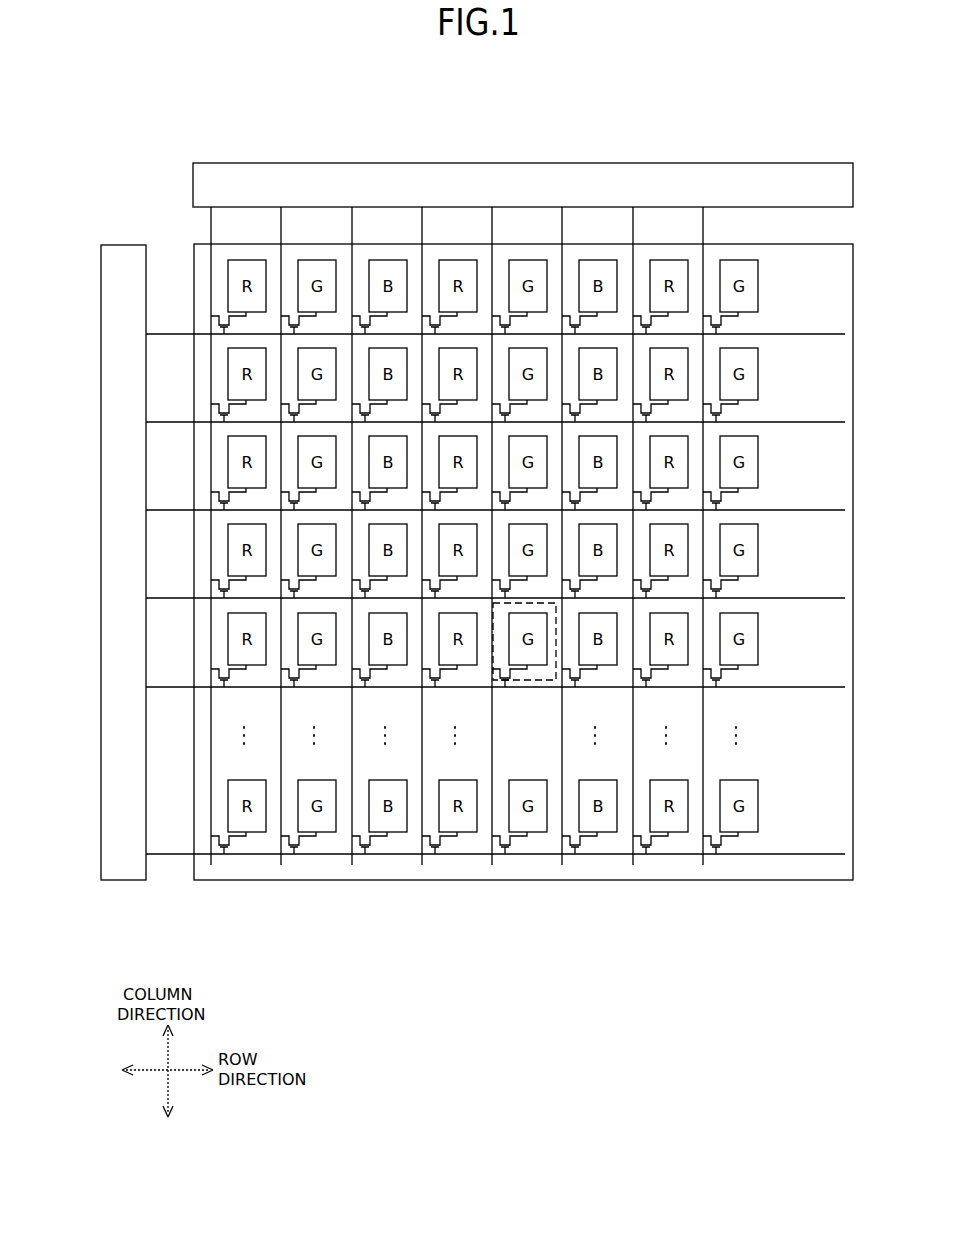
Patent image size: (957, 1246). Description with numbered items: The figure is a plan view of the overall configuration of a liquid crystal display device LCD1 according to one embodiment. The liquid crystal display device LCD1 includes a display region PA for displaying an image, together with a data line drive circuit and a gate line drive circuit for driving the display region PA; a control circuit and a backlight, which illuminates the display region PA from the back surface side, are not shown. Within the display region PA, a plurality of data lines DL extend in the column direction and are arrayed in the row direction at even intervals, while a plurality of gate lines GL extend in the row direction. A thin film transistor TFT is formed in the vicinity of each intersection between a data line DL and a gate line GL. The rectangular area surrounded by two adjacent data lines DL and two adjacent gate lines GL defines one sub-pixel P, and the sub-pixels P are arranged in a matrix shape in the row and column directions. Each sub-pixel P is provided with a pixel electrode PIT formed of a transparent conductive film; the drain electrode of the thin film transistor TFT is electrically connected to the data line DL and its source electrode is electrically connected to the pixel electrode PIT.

The liquid crystal display device LCD1 is at (750, 85).
The data line DL is at (470, 536).
The gate line GL is at (495, 584).
The sub-pixel P is at (523, 681).
The display region PA is at (312, 880).
The pixel electrode PIT is at (675, 832).
The thin film transistor TFT is at (732, 840).